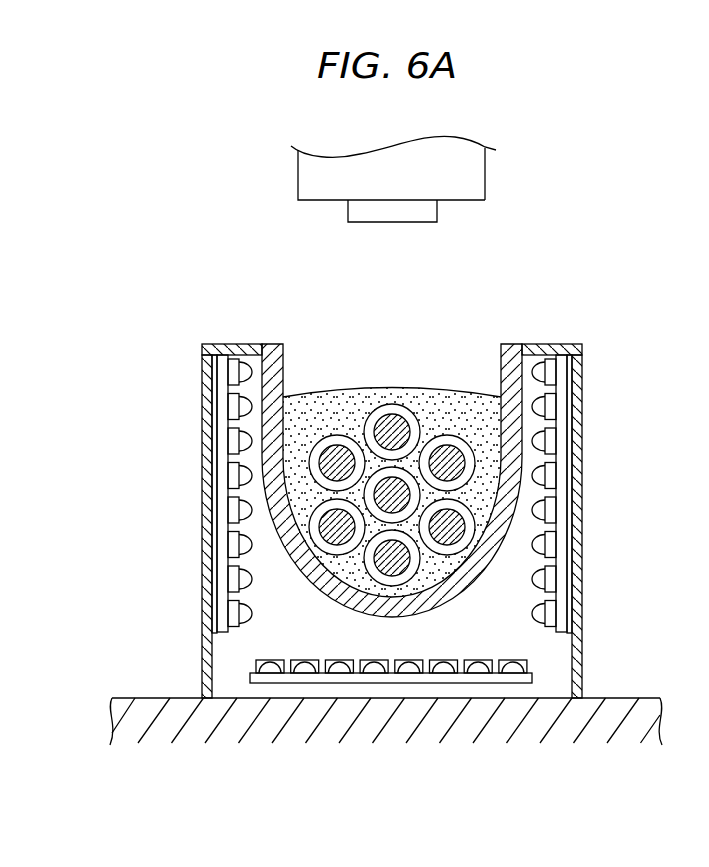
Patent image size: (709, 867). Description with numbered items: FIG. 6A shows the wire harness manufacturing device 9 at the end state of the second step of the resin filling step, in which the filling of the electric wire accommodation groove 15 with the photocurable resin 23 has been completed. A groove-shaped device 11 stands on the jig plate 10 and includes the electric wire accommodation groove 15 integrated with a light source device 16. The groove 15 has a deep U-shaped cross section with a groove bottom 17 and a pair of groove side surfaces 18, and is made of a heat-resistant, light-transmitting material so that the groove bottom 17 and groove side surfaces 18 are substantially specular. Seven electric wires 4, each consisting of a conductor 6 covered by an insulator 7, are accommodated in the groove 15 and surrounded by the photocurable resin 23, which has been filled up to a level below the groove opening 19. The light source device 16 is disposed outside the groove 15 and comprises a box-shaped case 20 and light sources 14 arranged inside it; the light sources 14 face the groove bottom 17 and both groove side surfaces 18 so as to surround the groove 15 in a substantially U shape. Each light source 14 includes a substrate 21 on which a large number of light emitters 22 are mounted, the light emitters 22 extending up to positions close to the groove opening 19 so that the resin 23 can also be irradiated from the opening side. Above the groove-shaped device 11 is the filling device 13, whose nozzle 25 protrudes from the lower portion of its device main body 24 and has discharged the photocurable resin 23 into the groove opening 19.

The electric wire 4 is at (148, 418).
The conductor 6 is at (313, 452).
The insulator 7 is at (325, 468).
The wire harness manufacturing device 9 is at (190, 185).
The jig plate 10 is at (122, 698).
The groove-shaped device 11 is at (322, 338).
The filling device 13 is at (487, 171).
The light source 14 is at (218, 387).
The electric wire accommodation groove 15 is at (405, 368).
The light source device 16 is at (145, 785).
The groove bottom 17 is at (437, 572).
The groove side surface 18 is at (285, 374).
The groove opening 19 is at (448, 334).
The case 20 is at (546, 345).
The substrate 21 is at (222, 538).
The light emitter 22 is at (247, 578).
The photocurable resin 23 is at (364, 393).
The device main body 24 is at (310, 180).
The nozzle 25 is at (430, 210).